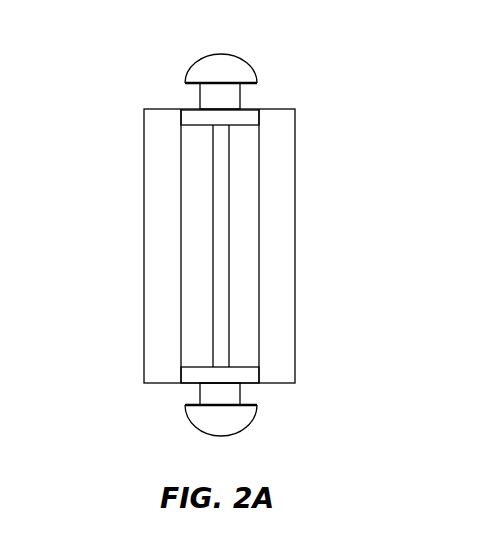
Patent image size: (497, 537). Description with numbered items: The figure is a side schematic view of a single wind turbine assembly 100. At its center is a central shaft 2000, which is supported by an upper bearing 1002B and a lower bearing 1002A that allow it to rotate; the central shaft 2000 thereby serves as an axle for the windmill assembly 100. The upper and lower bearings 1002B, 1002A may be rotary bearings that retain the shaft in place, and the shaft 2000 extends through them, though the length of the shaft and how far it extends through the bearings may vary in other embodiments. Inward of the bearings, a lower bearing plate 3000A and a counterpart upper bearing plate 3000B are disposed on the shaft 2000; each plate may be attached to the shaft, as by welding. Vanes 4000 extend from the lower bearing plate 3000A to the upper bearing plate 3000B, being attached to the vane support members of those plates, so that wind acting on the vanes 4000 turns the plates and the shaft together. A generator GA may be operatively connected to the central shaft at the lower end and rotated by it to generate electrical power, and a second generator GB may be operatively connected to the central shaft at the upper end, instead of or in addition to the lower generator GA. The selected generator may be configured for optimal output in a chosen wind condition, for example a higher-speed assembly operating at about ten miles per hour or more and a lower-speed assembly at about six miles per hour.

The wind turbine assembly 100 is at (223, 226).
The second generator GB is at (227, 68).
The generator GA is at (232, 420).
The upper bearing 1002B is at (225, 100).
The lower bearing 1002A is at (212, 393).
The upper bearing plate 3000B is at (259, 118).
The lower bearing plate 3000A is at (259, 375).
The central shaft 2000 is at (223, 243).
The vane 4000 is at (281, 306).